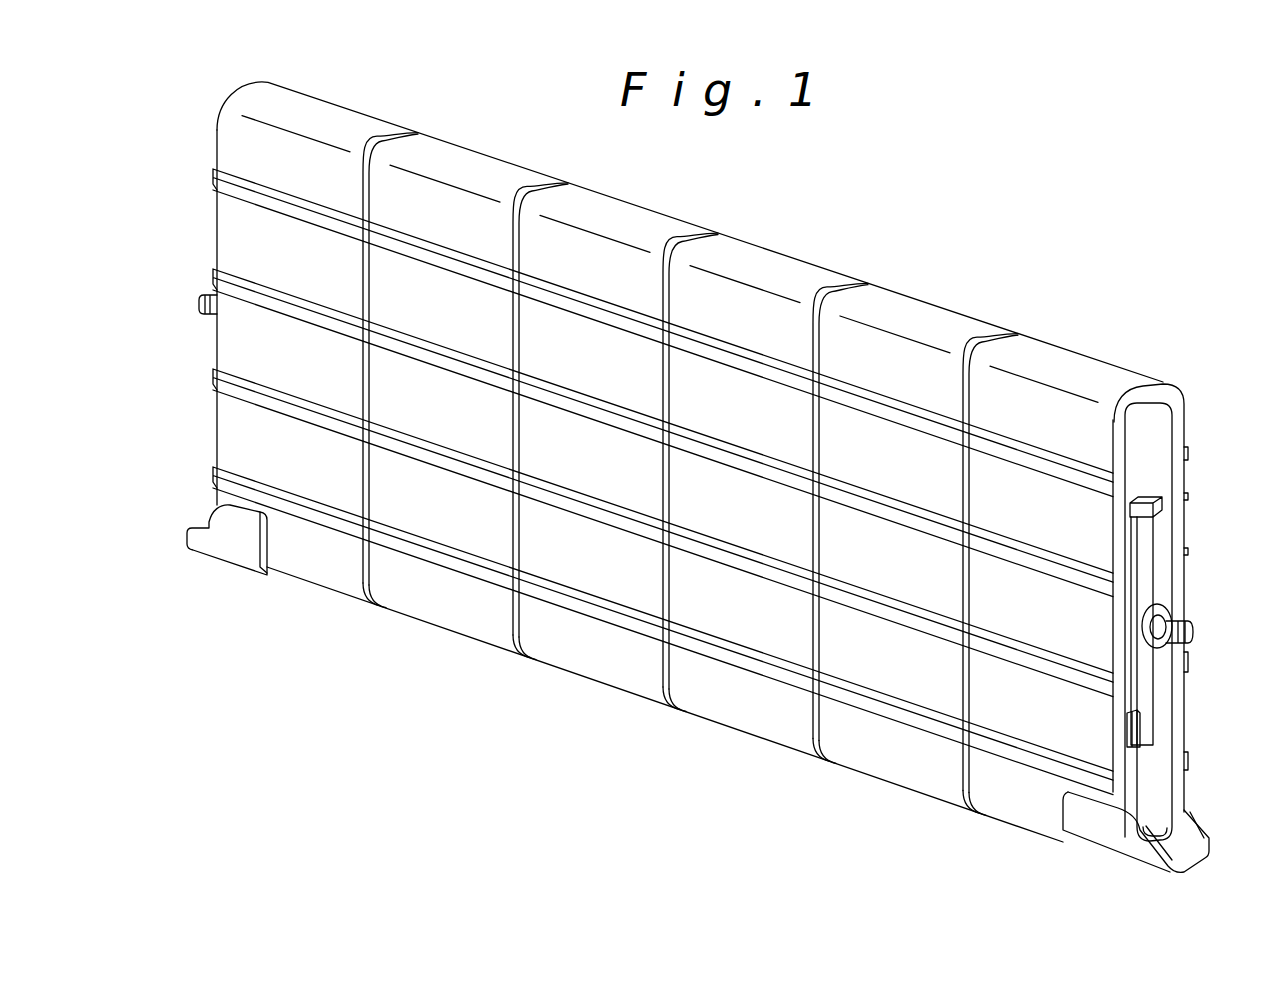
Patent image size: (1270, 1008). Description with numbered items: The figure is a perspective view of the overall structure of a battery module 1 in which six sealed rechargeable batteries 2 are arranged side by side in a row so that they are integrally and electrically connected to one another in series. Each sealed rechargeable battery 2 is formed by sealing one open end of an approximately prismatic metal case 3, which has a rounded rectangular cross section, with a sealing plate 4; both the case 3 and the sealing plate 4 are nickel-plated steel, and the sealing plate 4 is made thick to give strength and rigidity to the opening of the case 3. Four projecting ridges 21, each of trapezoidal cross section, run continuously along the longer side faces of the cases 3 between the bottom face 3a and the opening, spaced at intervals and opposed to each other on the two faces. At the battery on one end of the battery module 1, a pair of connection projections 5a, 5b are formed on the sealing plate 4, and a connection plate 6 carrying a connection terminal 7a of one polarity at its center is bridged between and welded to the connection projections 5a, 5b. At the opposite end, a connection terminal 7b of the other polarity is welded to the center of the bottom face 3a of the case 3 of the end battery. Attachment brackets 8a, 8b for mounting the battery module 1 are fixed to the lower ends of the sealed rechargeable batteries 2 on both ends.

The battery module 1 is at (897, 213).
The sealed rechargeable battery 2 is at (367, 100).
The projecting ridge 21 is at (1047, 462).
The case 3 is at (1067, 422).
The bottom face 3a is at (212, 227).
The sealing plate 4 is at (1147, 448).
The connection projection 5a is at (1148, 497).
The connection projection 5b is at (1131, 725).
The connection plate 6 is at (1153, 550).
The connection terminal 7a is at (1197, 633).
The connection terminal 7b is at (200, 314).
The attachment bracket 8a is at (1083, 820).
The attachment bracket 8b is at (242, 550).